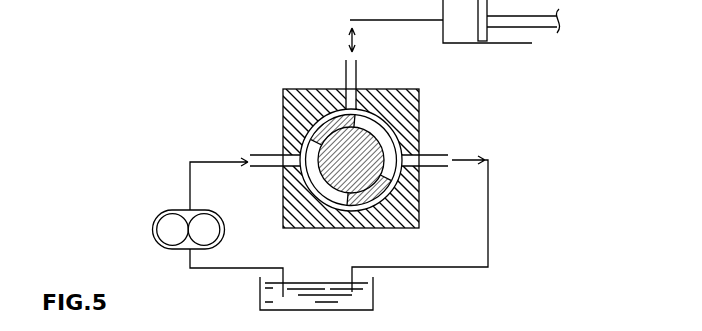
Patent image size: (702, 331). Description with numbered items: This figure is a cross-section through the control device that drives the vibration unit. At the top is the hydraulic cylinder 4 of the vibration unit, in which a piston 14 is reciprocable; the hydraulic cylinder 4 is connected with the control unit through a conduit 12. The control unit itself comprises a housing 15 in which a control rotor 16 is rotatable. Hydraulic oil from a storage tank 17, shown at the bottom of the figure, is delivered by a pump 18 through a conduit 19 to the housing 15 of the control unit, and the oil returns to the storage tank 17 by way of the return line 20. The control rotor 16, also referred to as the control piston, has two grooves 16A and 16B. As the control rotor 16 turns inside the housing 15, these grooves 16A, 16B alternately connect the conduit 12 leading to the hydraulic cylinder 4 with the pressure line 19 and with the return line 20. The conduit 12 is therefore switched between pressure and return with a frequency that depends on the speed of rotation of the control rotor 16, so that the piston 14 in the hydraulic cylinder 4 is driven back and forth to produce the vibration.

The hydraulic cylinder 4 is at (468, 43).
The piston 14 is at (483, 22).
The conduit 12 is at (400, 20).
The housing 15 is at (403, 127).
The control rotor 16 is at (358, 158).
The groove 16A is at (315, 178).
The groove 16B is at (372, 128).
The storage tank 17 is at (333, 288).
The pump 18 is at (197, 225).
The conduit 19 is at (268, 166).
The return line 20 is at (433, 161).